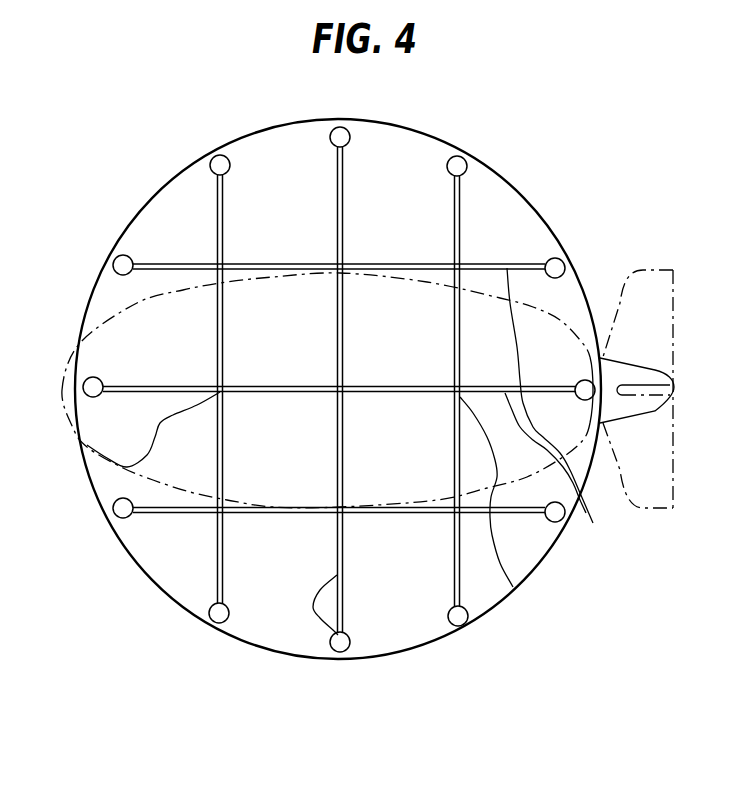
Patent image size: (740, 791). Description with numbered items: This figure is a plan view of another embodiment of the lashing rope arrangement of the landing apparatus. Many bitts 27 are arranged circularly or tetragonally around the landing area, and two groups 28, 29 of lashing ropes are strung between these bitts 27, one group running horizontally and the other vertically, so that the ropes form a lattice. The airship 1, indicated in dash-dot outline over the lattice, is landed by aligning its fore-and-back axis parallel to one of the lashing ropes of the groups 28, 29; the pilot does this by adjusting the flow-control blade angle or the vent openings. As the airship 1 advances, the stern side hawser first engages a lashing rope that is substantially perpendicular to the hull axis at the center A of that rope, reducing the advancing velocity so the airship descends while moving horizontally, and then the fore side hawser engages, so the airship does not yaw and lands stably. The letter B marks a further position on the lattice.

The airship 1 is at (528, 304).
The bitts 27 is at (118, 264).
The group of lashing ropes 28 is at (457, 585).
The group of lashing ropes 29 is at (527, 514).
The center of the lashing rope A is at (513, 587).
The flow boundary curve B is at (96, 479).